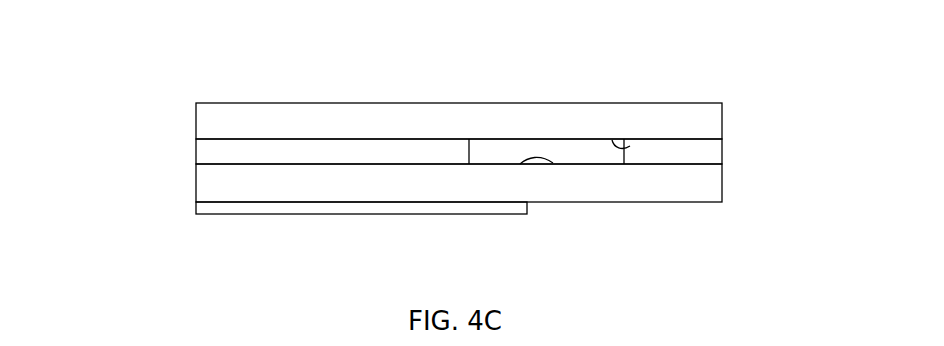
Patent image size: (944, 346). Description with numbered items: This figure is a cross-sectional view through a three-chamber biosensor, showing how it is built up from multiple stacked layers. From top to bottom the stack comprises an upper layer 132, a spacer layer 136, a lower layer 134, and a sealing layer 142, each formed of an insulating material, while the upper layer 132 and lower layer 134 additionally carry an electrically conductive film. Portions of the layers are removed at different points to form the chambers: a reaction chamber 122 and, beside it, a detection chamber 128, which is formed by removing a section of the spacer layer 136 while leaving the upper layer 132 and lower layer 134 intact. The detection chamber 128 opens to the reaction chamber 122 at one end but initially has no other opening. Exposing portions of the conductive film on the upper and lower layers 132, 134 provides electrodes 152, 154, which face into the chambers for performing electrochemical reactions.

The upper layer 132 is at (207, 120).
The spacer layer 136 is at (207, 152).
The lower layer 134 is at (208, 183).
The sealing layer 142 is at (207, 212).
The reaction chamber 122 is at (505, 158).
The detection chamber 128 is at (603, 158).
The electrode 154 is at (622, 149).
The electrode 152 is at (520, 164).